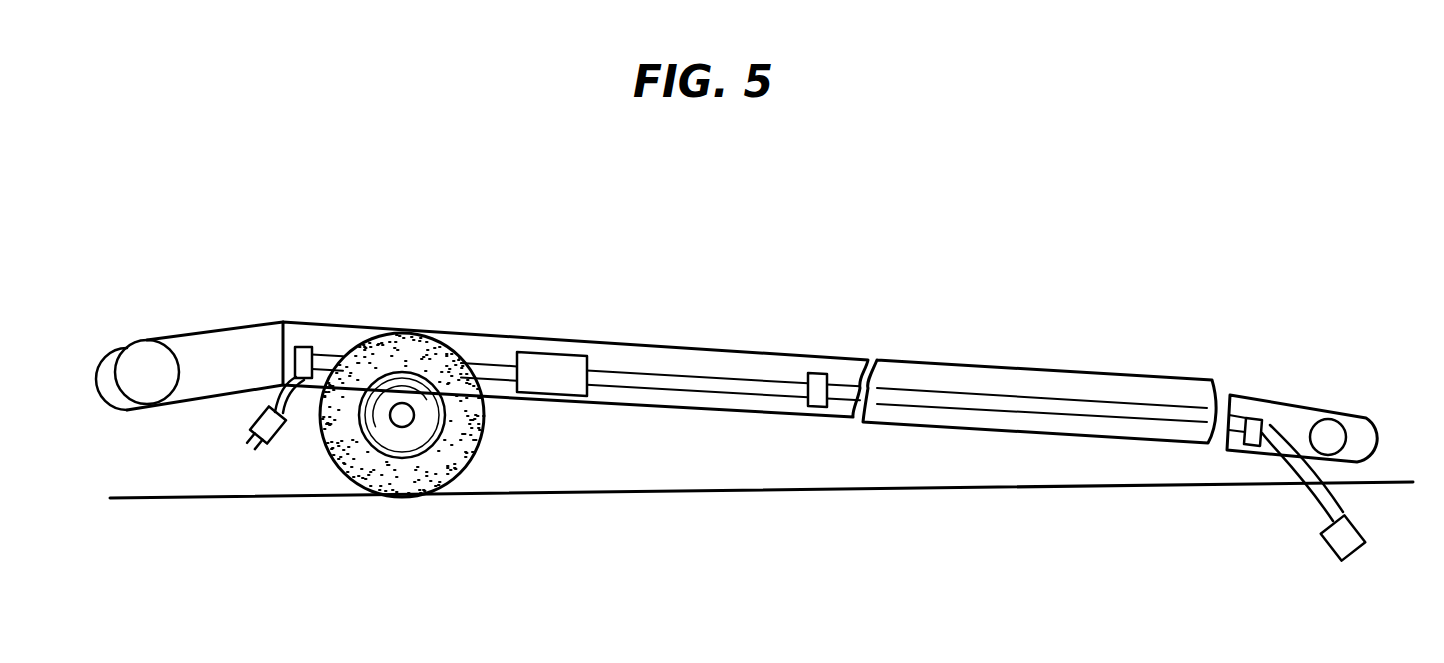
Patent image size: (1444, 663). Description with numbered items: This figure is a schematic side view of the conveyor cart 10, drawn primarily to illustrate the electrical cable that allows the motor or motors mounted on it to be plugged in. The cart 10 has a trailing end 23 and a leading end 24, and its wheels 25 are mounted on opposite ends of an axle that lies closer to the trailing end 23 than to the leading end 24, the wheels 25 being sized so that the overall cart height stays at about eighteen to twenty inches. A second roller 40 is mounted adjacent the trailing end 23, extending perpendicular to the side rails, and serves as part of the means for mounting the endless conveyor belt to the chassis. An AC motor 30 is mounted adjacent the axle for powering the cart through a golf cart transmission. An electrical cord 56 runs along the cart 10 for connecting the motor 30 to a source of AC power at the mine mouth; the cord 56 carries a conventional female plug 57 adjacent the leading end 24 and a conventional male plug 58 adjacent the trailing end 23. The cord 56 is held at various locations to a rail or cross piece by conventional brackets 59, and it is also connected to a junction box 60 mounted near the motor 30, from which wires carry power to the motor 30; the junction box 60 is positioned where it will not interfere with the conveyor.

The conveyor cart 10 is at (1072, 268).
The trailing end 23 is at (189, 345).
The leading end 24 is at (1353, 489).
The wheels 25 is at (403, 480).
The AC motor 30 is at (1328, 430).
The second roller 40 is at (147, 392).
The electrical cord 56 is at (992, 402).
The female plug 57 is at (1340, 545).
The male plug 58 is at (280, 447).
The bracket 59 is at (304, 348).
The junction box 60 is at (548, 367).